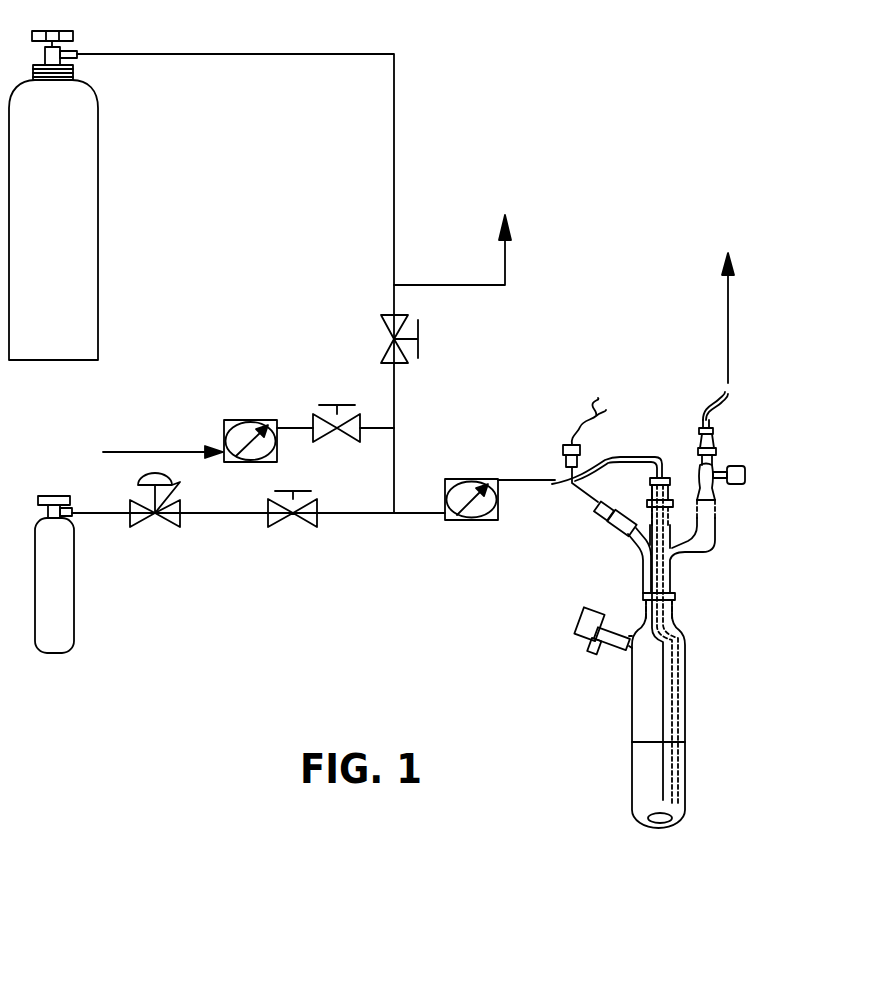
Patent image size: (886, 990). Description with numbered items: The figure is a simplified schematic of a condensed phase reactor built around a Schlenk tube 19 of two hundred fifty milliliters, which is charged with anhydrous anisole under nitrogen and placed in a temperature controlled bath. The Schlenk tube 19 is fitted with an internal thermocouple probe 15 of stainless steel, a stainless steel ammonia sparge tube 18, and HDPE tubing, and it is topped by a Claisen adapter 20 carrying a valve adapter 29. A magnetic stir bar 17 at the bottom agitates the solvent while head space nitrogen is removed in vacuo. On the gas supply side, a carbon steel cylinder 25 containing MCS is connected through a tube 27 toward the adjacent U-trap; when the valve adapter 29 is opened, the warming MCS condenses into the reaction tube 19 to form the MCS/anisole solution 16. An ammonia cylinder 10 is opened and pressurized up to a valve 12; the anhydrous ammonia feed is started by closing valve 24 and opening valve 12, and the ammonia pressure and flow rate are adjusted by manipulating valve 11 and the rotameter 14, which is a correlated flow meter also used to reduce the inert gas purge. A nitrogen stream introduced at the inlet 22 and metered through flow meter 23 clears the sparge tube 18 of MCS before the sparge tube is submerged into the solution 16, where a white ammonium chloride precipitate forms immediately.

The ammonia cylinder 10 is at (74, 612).
The valve 11 is at (160, 527).
The valve 12 is at (300, 527).
The rotameter 14 is at (460, 520).
The internal thermocouple probe 15 is at (575, 490).
The MCS/anisole solution 16 is at (636, 752).
The magnetic stir bar 17 is at (658, 825).
The ammonia sparge tube 18 is at (676, 662).
The Schlenk tube 19 is at (686, 622).
The Claisen adapter 20 is at (718, 528).
The purge gas inlet 22 is at (160, 452).
The flow meter 23 is at (262, 427).
The valve 24 is at (343, 442).
The carbon steel cylinder 25 is at (98, 221).
The tube 27 is at (463, 234).
The valve adapter 29 is at (745, 471).